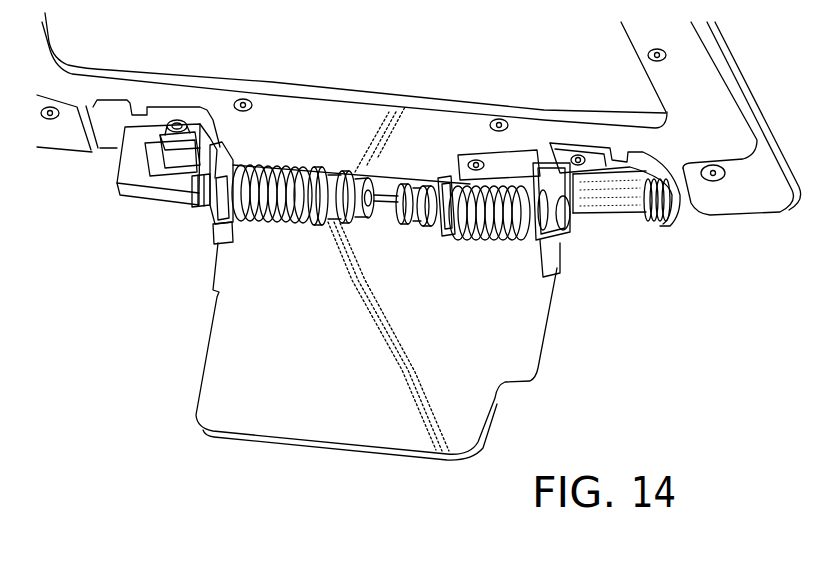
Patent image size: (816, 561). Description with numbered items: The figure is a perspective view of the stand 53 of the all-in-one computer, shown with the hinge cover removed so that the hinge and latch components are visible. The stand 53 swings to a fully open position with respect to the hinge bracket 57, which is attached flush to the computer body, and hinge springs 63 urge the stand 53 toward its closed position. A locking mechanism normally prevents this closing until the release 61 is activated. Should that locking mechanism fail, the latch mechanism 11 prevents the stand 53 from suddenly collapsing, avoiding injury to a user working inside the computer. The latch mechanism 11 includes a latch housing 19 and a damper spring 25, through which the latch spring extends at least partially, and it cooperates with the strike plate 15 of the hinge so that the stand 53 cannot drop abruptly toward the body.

The stand 53 is at (334, 146).
The hinge bracket 57 is at (389, 258).
The release 61 is at (170, 147).
The hinge springs 63 is at (285, 227).
The strike plate 15 is at (547, 167).
The latch housing 19 is at (644, 163).
The latch mechanism 11 is at (620, 208).
The damper spring 25 is at (653, 220).